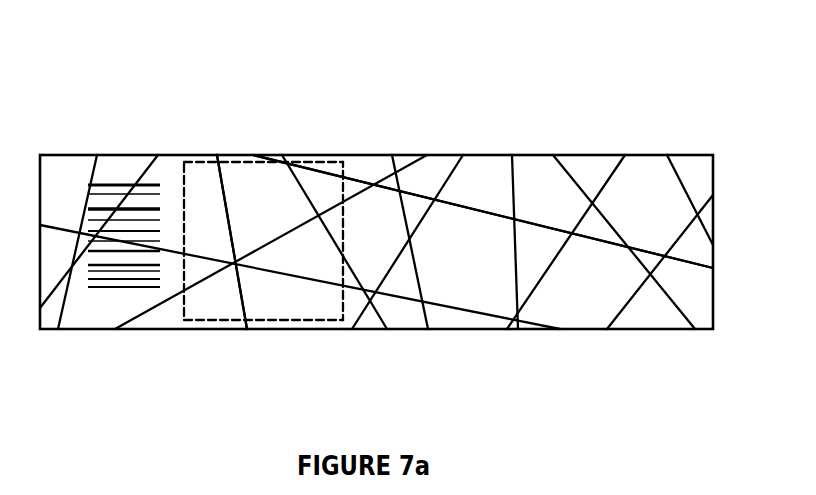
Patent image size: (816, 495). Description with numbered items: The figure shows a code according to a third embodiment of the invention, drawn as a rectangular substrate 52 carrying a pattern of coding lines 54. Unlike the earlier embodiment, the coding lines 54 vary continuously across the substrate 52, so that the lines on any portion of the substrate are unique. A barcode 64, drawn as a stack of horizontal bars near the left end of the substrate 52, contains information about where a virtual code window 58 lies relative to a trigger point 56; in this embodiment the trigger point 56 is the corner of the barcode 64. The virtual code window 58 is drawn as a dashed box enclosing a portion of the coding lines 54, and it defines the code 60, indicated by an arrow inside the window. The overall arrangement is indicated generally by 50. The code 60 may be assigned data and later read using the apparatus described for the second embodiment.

The patterned plate / substrate 50 is at (507, 132).
The substrate 52 is at (648, 315).
The coding lines 54 is at (368, 186).
The trigger point 56 is at (96, 242).
The virtual code window 58 is at (311, 323).
The code 60 is at (221, 319).
The barcode 64 is at (112, 190).